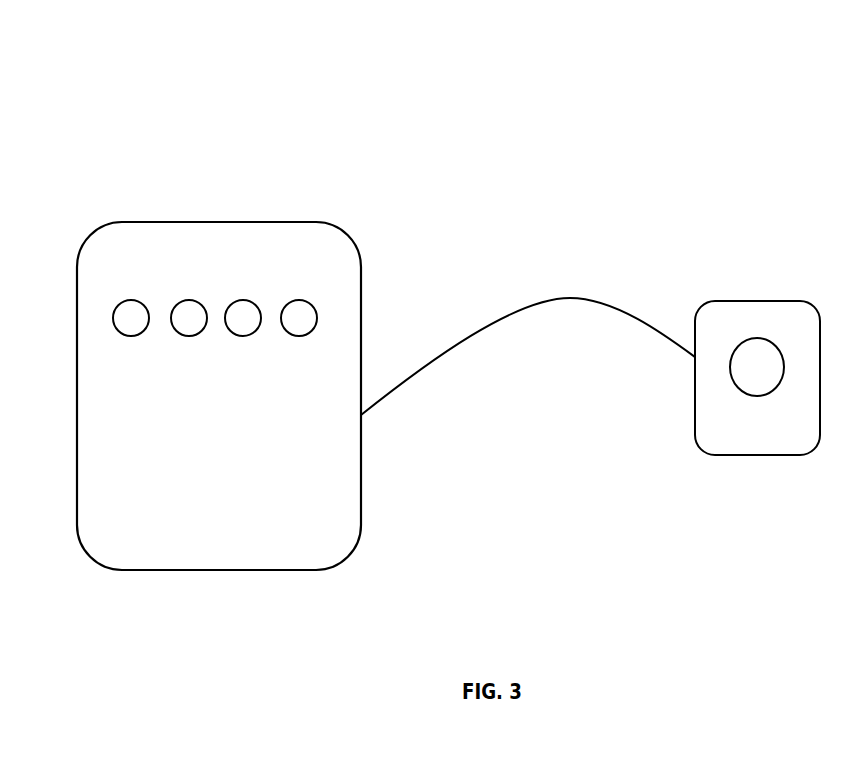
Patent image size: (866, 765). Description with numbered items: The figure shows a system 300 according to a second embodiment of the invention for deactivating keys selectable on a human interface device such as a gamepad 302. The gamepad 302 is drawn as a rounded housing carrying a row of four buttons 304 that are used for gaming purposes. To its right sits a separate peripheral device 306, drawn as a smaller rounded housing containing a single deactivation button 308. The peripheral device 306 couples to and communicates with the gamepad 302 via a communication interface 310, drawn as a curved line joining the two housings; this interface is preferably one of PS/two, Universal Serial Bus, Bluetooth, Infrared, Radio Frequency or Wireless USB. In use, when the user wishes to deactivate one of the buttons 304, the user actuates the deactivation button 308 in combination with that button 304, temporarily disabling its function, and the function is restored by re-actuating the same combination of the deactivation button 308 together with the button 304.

The system 300 is at (111, 108).
The gamepad 302 is at (298, 222).
The buttons 304 is at (189, 336).
The peripheral device 306 is at (757, 301).
The deactivation button 308 is at (753, 396).
The communication interface 310 is at (563, 299).